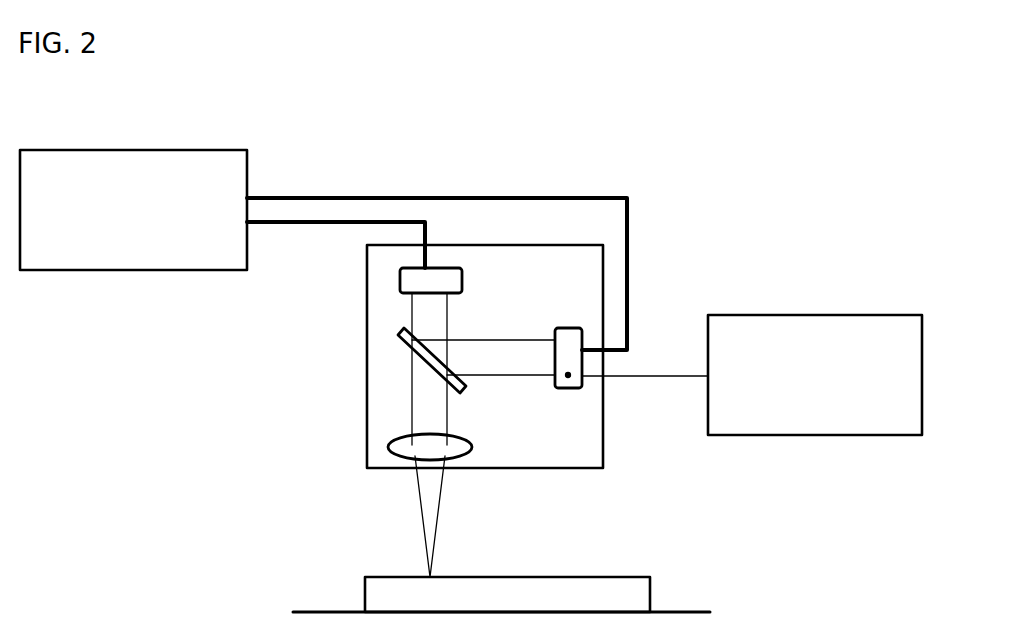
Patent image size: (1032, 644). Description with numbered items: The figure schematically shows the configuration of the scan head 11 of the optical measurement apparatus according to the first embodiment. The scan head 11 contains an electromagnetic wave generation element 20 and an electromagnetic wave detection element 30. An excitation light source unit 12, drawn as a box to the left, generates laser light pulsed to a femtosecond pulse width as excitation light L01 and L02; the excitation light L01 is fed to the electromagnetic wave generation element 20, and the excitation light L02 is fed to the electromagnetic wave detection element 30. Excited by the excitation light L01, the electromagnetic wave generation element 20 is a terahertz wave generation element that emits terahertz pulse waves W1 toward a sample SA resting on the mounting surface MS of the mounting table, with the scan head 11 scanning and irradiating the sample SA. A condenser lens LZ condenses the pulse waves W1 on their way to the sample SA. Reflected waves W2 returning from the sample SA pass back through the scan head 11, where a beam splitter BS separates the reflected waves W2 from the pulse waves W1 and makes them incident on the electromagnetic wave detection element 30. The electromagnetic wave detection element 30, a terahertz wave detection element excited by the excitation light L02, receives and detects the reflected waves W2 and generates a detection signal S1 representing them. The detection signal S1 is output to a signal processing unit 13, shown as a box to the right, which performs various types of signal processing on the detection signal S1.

The excitation light source unit 12 is at (223, 149).
The signal processing unit 13 is at (900, 315).
The scan head 11 is at (518, 244).
The electromagnetic wave generation element 20 is at (445, 268).
The electromagnetic wave detection element 30 is at (566, 328).
The excitation light L01 is at (336, 245).
The excitation light L02 is at (437, 259).
The pulse waves W1 is at (425, 318).
The reflected waves W2 is at (520, 363).
The beam splitter BS is at (400, 343).
The condenser lens LZ is at (390, 447).
The mounting surface MS is at (312, 612).
The sample SA is at (637, 590).
The detection signal S1 is at (645, 362).